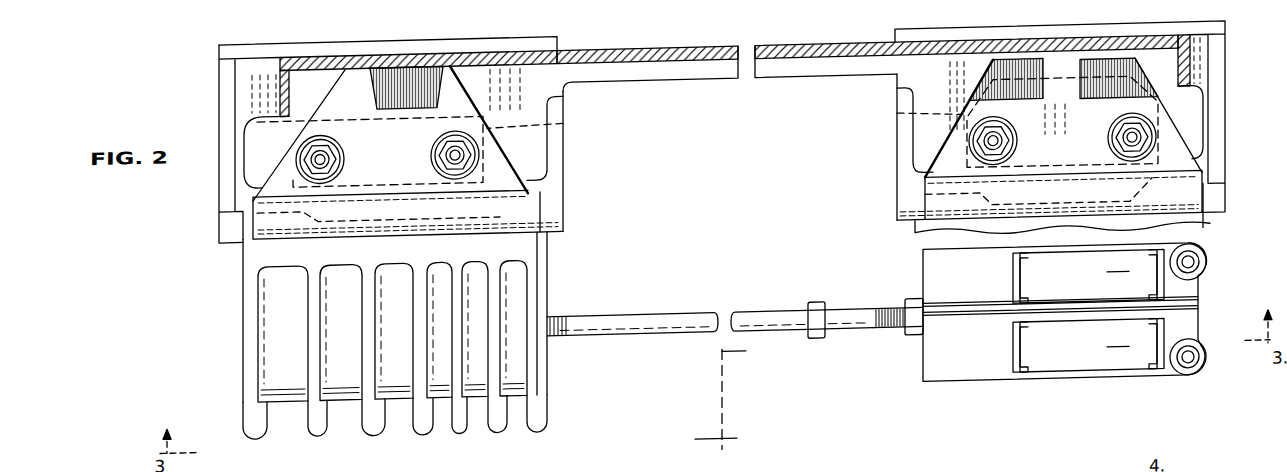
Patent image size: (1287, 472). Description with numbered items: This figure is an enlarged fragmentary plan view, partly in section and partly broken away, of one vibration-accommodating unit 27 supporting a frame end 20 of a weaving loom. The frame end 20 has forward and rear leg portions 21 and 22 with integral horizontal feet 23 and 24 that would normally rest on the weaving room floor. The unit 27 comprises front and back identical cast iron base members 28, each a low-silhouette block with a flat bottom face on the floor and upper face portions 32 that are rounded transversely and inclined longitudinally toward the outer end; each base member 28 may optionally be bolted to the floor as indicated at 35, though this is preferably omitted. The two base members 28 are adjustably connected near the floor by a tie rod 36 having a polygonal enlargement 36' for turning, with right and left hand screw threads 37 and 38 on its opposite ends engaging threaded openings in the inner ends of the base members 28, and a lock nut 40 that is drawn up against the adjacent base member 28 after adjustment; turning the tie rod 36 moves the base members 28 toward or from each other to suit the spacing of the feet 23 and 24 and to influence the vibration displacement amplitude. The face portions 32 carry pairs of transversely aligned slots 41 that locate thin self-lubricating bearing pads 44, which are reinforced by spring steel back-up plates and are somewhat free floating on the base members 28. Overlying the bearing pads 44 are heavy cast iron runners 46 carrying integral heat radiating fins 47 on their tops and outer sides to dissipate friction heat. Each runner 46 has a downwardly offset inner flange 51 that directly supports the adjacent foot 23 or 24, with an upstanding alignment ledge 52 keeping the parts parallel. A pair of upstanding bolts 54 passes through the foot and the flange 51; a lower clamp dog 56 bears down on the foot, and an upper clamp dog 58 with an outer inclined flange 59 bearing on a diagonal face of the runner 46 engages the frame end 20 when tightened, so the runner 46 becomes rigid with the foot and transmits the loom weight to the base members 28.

The frame end 20 is at (715, 82).
The forward leg portion 21 is at (1187, 92).
The rear leg portion 22 is at (270, 83).
The forward foot 23 is at (1195, 149).
The rear foot 24 is at (250, 163).
The unit 27 is at (364, 332).
The base member 28 is at (1048, 328).
The face portion 32 is at (930, 286).
The bolting provision 35 is at (1188, 387).
The tie rod 36 is at (802, 304).
The polygonal enlargement 36' is at (823, 345).
The right hand screw thread 37 is at (886, 355).
The left hand screw thread 38 is at (558, 326).
The lock nut 40 is at (913, 351).
The slot 41 is at (1016, 352).
The bearing pad 44 is at (1088, 311).
The runner 46 is at (243, 308).
The heat radiating fin 47 is at (455, 434).
The extension or flange 51 is at (223, 108).
The alignment ledge 52 is at (223, 55).
The bolt 54 is at (328, 160).
The lower clamp dog 56 is at (564, 132).
The upper clamp dog 58 is at (505, 179).
The inclined flange 59 is at (513, 225).